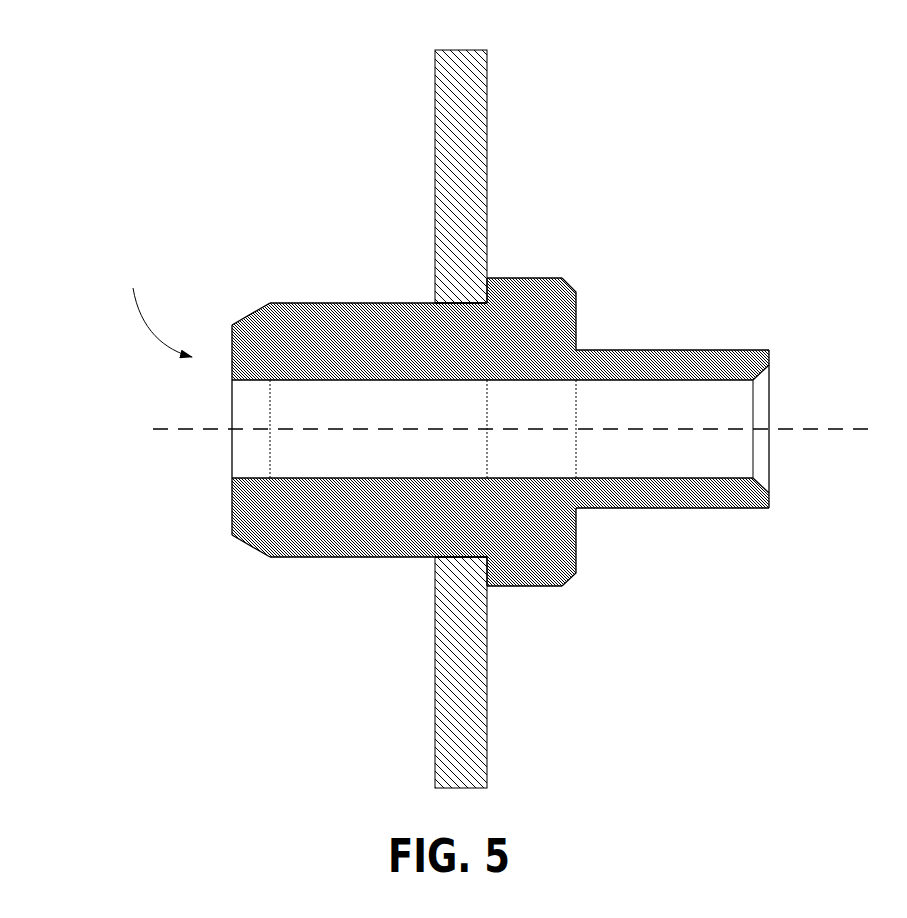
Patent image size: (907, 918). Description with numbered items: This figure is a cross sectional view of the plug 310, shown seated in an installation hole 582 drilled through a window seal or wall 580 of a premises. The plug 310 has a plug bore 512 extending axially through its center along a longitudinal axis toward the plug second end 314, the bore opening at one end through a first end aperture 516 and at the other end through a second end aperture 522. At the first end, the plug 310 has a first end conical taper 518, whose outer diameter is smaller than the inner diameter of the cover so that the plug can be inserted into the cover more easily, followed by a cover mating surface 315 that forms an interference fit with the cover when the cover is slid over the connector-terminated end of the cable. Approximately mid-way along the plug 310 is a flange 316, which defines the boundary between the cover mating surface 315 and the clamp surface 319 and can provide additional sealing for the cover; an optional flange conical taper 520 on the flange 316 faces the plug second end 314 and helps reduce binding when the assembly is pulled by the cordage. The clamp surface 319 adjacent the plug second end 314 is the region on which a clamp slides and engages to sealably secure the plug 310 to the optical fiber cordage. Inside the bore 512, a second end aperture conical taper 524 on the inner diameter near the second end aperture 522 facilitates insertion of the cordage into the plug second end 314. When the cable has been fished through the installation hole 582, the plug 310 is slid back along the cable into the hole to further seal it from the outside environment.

The plug 310 is at (572, 148).
The plug bore 512 is at (357, 452).
The first end conical taper 518 is at (252, 315).
The cover mating surface 315 is at (355, 300).
The flange 316 is at (508, 275).
The flange conical taper 520 is at (568, 275).
The clamp surface 319 is at (605, 348).
The plug second end 314 is at (815, 377).
The second end aperture conical taper 524 is at (745, 372).
The first end aperture 516 is at (265, 448).
The second end aperture 522 is at (862, 402).
The window seal or wall 580 is at (445, 158).
The installation hole 582 is at (432, 300).